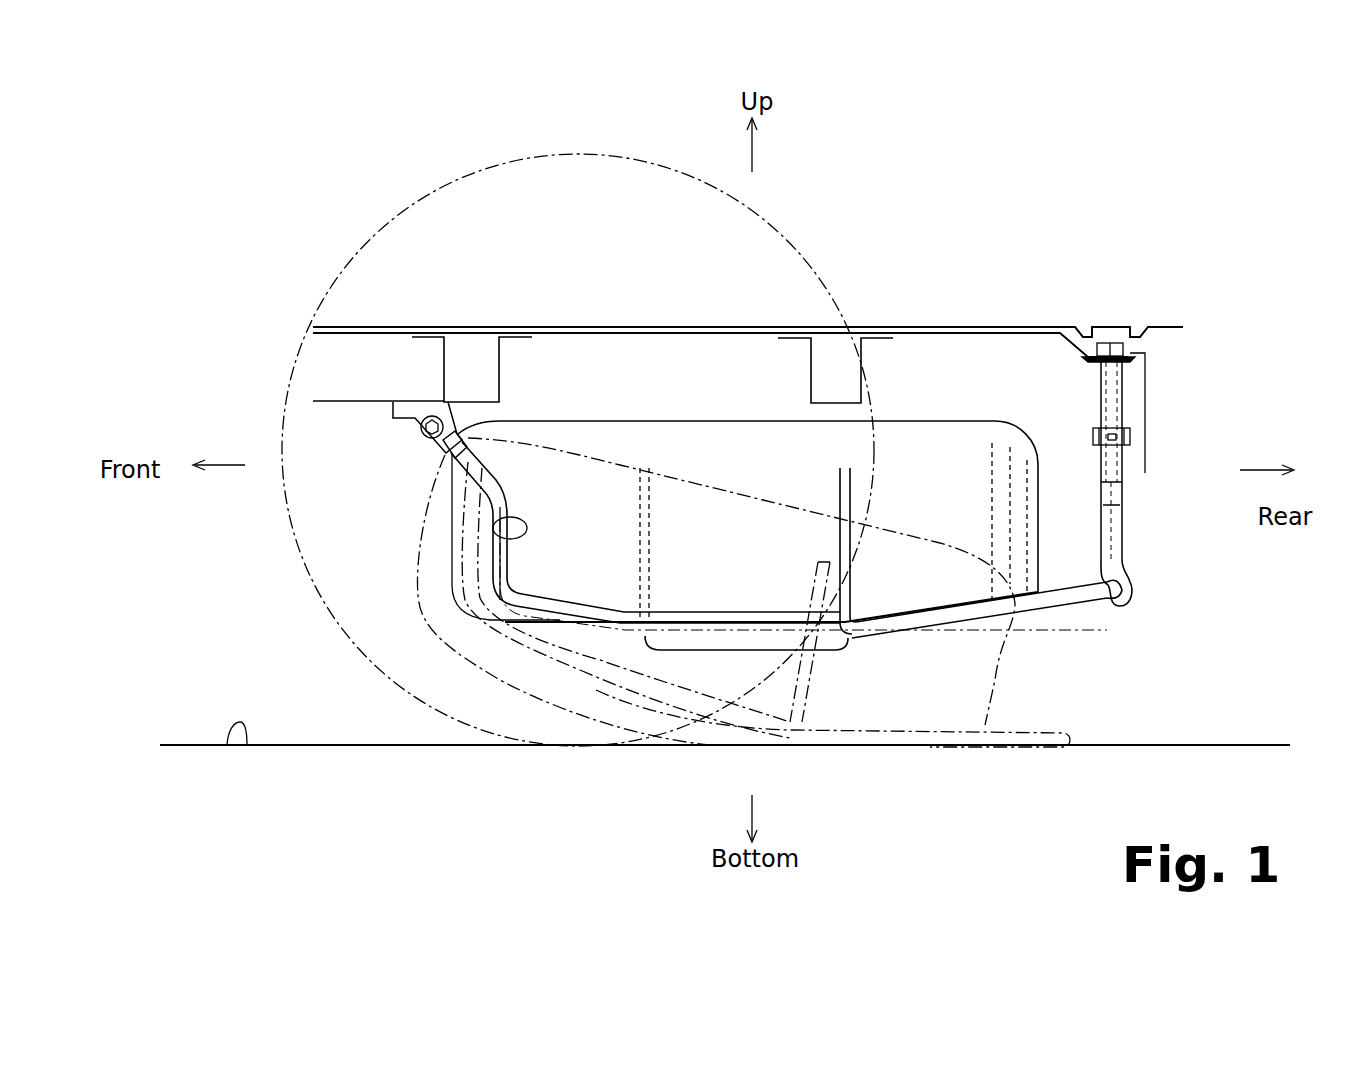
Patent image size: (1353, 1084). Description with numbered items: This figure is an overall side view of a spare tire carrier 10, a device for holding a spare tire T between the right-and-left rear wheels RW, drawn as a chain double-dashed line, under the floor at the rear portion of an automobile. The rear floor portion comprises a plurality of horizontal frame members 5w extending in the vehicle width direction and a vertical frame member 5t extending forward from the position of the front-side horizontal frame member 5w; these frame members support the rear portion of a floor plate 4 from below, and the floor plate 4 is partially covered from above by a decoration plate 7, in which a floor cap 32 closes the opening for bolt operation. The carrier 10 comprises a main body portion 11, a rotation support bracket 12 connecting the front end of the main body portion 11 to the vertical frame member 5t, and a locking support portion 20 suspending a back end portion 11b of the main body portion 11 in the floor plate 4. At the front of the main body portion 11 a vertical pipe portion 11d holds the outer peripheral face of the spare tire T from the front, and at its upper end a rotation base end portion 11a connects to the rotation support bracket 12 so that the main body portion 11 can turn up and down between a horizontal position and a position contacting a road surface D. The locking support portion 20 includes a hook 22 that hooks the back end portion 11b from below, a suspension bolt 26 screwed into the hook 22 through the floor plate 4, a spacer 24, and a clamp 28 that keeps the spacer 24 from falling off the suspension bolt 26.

The rear wheels RW is at (402, 210).
The decoration plate 7 is at (1035, 325).
The floor cap 32 is at (1108, 325).
The floor plate 4 is at (1088, 350).
The horizontal frame members 5w is at (499, 377).
The vertical frame member 5t is at (345, 380).
The rotation support bracket 12 is at (404, 402).
The rotation base end portion 11a is at (453, 440).
The spare tire T is at (943, 480).
The main body portion 11 is at (878, 636).
The vertical pipe portion 11d is at (527, 528).
The back end portion 11b is at (1128, 590).
The spare tire carrier 10 is at (1032, 622).
The locking support portion 20 is at (1142, 515).
The suspension bolt 26 is at (1123, 348).
The spacer 24 is at (1112, 398).
The clamp 28 is at (1130, 436).
The hook 22 is at (1110, 525).
The road surface D is at (246, 745).